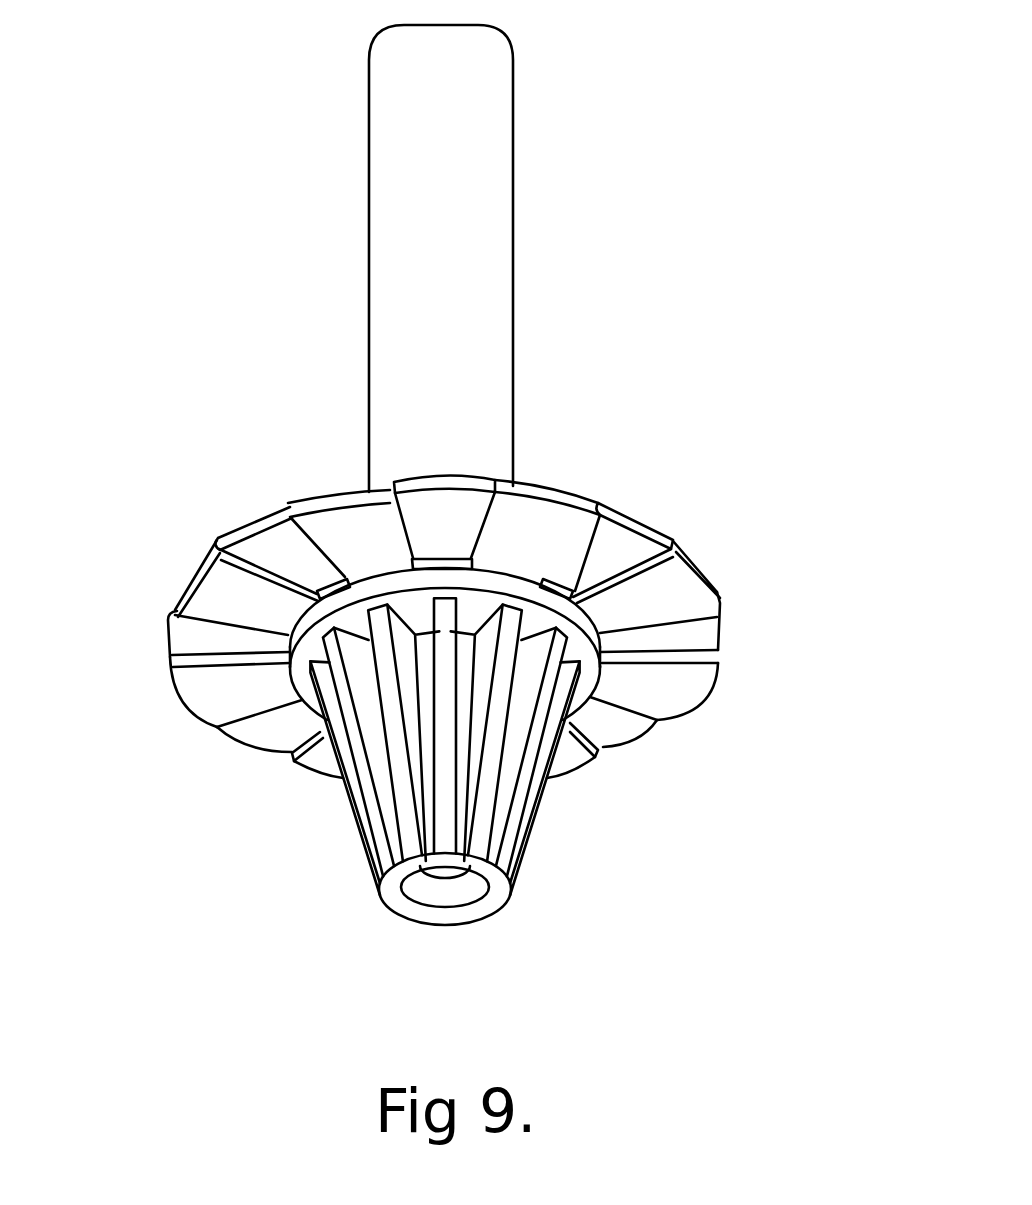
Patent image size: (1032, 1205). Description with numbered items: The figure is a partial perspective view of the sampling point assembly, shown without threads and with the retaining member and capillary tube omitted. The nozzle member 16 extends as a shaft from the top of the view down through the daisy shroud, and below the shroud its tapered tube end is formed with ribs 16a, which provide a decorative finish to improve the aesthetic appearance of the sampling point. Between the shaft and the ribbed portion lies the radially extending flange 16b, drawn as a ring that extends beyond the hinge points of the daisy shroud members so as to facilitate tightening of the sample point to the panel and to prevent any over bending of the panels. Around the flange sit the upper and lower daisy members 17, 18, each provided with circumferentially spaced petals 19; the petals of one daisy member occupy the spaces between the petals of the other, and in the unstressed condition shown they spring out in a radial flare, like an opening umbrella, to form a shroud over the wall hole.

The threaded nozzle member 16 is at (510, 157).
The ribs 16a is at (378, 775).
The radially extending flange 16b is at (307, 647).
The upper daisy member 17 is at (722, 580).
The lower daisy member 18 is at (240, 517).
The petals 19 is at (533, 497).